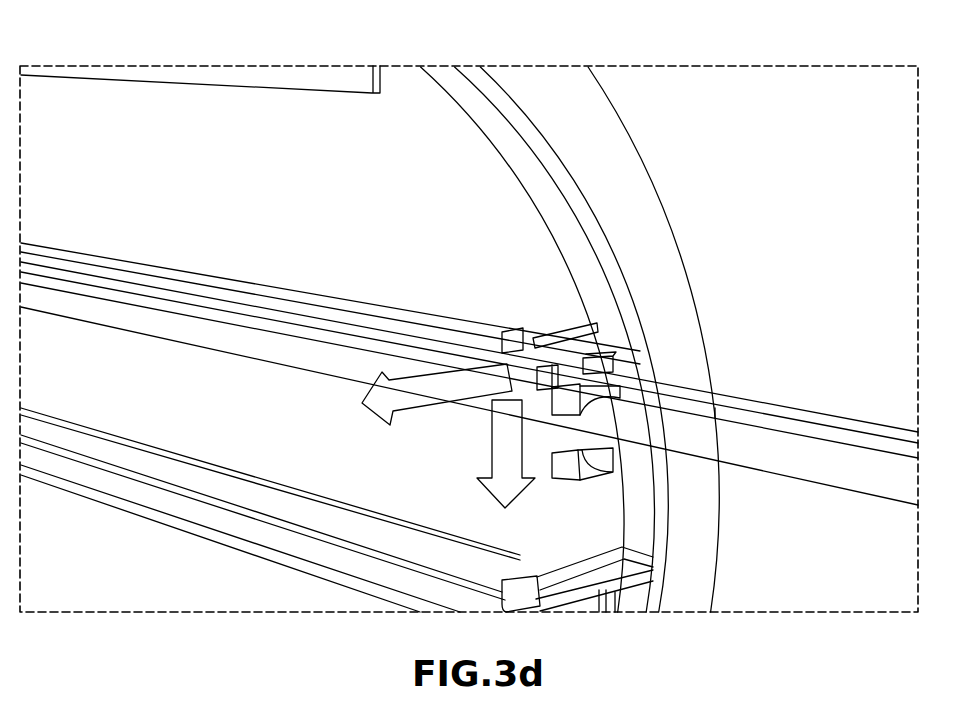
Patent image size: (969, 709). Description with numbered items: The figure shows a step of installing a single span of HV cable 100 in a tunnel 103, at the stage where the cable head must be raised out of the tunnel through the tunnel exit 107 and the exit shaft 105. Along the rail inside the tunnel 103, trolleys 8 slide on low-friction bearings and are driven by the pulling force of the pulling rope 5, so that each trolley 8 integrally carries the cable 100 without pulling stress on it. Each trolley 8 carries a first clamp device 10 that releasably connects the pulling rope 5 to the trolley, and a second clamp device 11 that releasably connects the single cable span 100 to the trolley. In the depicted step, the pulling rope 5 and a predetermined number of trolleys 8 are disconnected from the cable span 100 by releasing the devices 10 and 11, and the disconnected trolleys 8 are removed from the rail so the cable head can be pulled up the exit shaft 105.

The tunnel 103 is at (432, 190).
The exit shaft 105 is at (800, 172).
The tunnel exit 107 is at (510, 217).
The device 10 is at (528, 368).
The trolley 8 is at (575, 362).
The pulling rope 5 is at (760, 408).
The device 11 is at (562, 482).
The single span of HV cable 100 is at (802, 460).